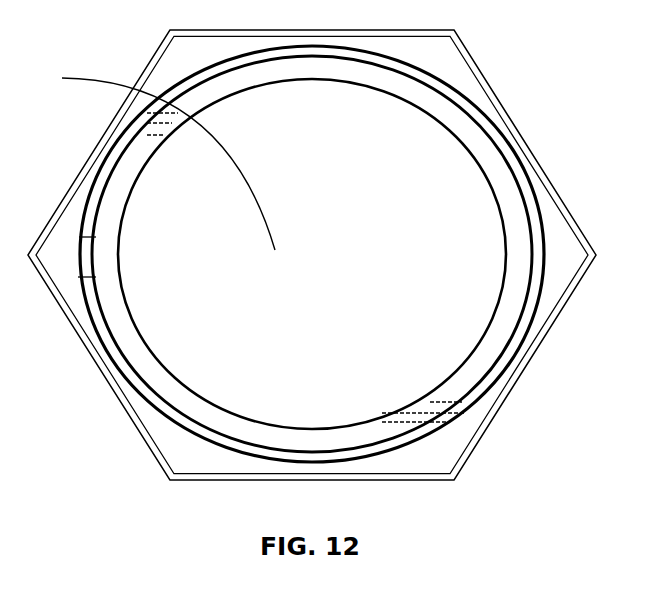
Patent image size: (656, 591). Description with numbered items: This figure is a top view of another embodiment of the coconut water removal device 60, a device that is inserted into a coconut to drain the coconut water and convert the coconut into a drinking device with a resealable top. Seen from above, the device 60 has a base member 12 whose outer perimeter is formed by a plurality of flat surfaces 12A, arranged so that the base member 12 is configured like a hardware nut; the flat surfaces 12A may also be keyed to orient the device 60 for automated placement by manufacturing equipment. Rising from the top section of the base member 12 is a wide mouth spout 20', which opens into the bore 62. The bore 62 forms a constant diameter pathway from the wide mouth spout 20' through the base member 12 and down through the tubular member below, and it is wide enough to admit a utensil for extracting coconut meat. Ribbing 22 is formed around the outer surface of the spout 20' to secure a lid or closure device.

The base member 12 is at (327, 255).
The flat surfaces 12A is at (497, 386).
The wide mouth spout 20' is at (318, 254).
The ribbing 22 is at (264, 254).
The bore 62 is at (150, 161).
The coconut water removal device 60 is at (92, 40).